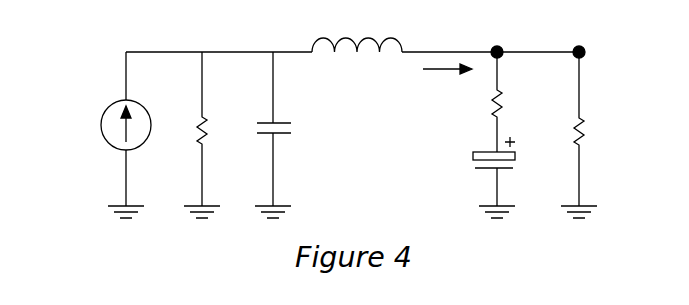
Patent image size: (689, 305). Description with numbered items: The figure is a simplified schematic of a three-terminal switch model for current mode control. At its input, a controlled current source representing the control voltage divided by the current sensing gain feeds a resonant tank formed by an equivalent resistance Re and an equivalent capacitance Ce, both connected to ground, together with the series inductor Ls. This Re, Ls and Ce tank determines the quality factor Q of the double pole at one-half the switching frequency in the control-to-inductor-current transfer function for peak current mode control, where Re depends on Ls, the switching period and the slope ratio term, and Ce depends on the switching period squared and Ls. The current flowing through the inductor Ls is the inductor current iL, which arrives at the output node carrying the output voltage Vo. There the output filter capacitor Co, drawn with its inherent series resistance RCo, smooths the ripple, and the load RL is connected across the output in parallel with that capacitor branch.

The equivalent resistance Re is at (182, 129).
The equivalent capacitance Ce is at (259, 129).
The inductor Ls is at (357, 28).
The inductor current iL is at (442, 87).
The output voltage Vo is at (531, 18).
The inherent resistance of output capacitor RCo is at (520, 102).
The output capacitor Co is at (511, 171).
The load RL is at (596, 129).